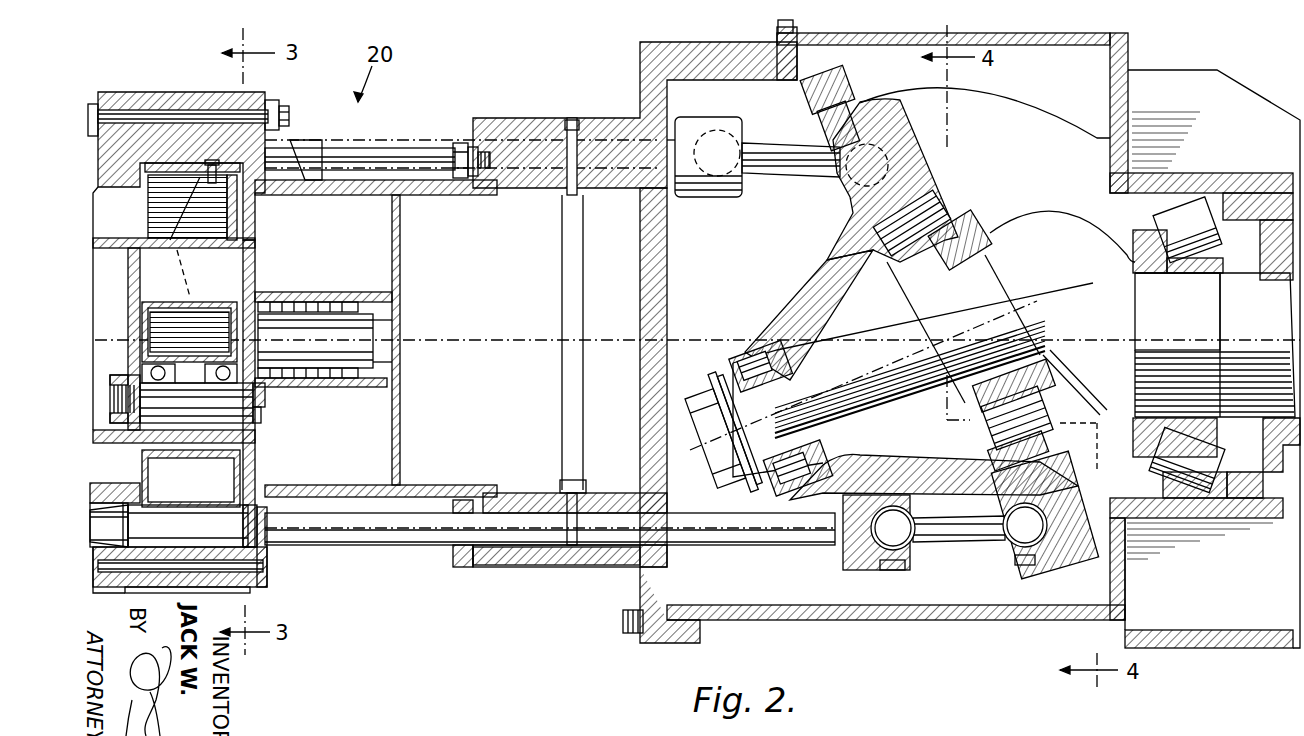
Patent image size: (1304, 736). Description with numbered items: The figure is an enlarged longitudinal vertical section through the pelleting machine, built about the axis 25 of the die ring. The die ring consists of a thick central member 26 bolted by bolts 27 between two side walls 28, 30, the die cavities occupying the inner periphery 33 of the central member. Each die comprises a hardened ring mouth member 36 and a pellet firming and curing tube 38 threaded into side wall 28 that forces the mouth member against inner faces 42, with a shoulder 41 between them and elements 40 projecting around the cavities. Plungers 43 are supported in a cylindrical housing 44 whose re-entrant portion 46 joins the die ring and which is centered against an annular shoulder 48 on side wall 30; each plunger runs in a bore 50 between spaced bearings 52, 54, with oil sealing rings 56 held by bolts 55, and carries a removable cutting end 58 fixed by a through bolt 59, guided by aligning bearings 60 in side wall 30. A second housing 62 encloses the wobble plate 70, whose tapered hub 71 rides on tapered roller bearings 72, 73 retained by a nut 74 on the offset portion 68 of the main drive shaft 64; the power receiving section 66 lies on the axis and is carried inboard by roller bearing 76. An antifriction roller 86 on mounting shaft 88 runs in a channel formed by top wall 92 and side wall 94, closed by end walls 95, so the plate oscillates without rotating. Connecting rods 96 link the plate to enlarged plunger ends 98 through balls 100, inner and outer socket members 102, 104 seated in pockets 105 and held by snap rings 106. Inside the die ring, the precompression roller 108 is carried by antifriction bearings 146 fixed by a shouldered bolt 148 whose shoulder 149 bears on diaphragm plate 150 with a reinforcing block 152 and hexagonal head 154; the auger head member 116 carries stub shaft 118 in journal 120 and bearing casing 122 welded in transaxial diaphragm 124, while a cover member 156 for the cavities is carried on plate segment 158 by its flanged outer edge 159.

The axis 25 is at (108, 340).
The central member 26 is at (204, 92).
The bolts 27 is at (290, 113).
The side member 28 is at (107, 92).
The side member 30 is at (267, 92).
The inner periphery 33 is at (215, 580).
The mouth members 36 is at (135, 520).
The tubes 38 is at (94, 585).
The elements 40 is at (130, 485).
The shoulder 41 is at (124, 528).
The inner faces 42 is at (130, 580).
The plungers 43 is at (390, 140).
The cylindrical housing 44 is at (532, 118).
The radially re-entrant portion 46 is at (420, 195).
The annular shoulder 48 is at (265, 193).
The bores 50 is at (590, 548).
The bearing 52 is at (500, 565).
The bearing 54 is at (630, 560).
The bolts 55 is at (450, 143).
The oil sealing rings 56 is at (470, 147).
The material engaging end 58 is at (262, 540).
The through running bolt 59 is at (300, 523).
The aligning bearings 60 is at (267, 560).
The second housing 62 is at (1015, 622).
The main drive shaft 64 is at (1140, 278).
The power receiving section 66 is at (1240, 312).
The offset portion 68 is at (872, 320).
The wobble plate 70 is at (940, 140).
The tapered hub 71 is at (810, 280).
The tapered roller bearing 72 is at (950, 225).
The tapered roller bearing 73 is at (750, 340).
The nut 74 is at (718, 400).
The roller bearing 76 is at (1195, 220).
The antifriction roller 86 is at (848, 78).
The mounting shaft 88 is at (822, 125).
The top wall 92 is at (1025, 45).
The side wall 94 is at (1070, 108).
The end walls 95 is at (1110, 78).
The connecting rods 96 is at (785, 170).
The enlarged rear ends 98 is at (700, 117).
The balls 100 is at (905, 515).
The inner socket member 102 is at (850, 560).
The outer socket member 104 is at (895, 568).
The pockets 105 is at (875, 568).
The snap rings 106 is at (1020, 560).
The precompression roller 108 is at (151, 302).
The head member 116 is at (262, 260).
The stub shaft 118 is at (400, 300).
The journal 120 is at (343, 300).
The bearing casing 122 is at (322, 290).
The transaxial diaphragm 124 is at (400, 260).
The antifriction bearings 146 is at (190, 450).
The shouldered bolt 148 is at (265, 400).
The shouldered end 149 is at (140, 394).
The diaphragm plate 150 is at (128, 308).
The reinforcing block 152 is at (112, 375).
The hexagonal head 154 is at (261, 412).
The cover member 156 is at (173, 163).
The plate segment 158 is at (240, 215).
The flanged outer edge 159 is at (200, 180).